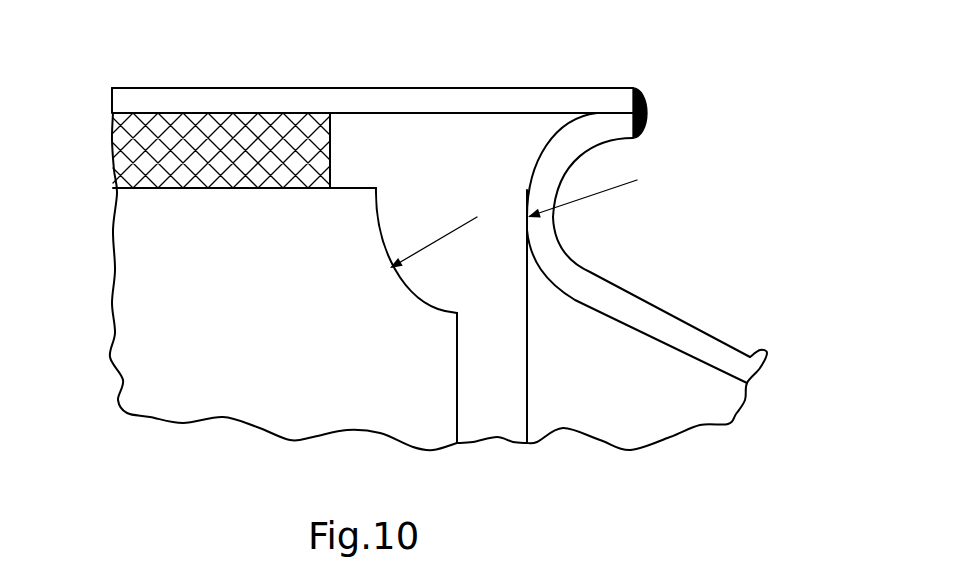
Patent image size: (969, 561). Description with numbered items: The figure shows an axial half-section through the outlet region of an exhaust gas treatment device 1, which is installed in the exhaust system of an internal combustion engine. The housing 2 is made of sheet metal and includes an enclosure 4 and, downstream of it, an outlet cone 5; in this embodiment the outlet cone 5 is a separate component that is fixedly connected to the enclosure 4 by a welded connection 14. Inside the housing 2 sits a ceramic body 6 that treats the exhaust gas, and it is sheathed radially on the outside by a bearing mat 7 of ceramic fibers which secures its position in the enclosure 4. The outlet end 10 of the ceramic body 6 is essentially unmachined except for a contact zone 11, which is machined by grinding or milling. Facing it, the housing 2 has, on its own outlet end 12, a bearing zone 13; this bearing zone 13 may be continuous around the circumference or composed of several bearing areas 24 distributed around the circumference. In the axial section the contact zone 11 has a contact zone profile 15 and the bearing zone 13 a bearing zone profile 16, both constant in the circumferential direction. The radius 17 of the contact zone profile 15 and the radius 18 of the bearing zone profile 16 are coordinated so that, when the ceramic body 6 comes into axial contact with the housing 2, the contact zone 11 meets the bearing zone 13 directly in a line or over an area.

The exhaust gas treatment device 1 is at (797, 173).
The housing 2 is at (152, 85).
The enclosure 4 is at (264, 95).
The outlet cone 5 is at (690, 348).
The ceramic body 6 is at (139, 397).
The bearing mat 7 is at (165, 166).
The outlet end 10 is at (458, 400).
The contact zone 11 is at (440, 297).
The outlet end 12 is at (650, 335).
The bearing zone 13 is at (514, 197).
The welded connection 14 is at (649, 100).
The contact zone profile 15 is at (380, 208).
The bearing zone profile 16 is at (532, 243).
The radius of the contact zone profile 17 is at (438, 239).
The radius of the bearing zone profile 18 is at (597, 193).
The bearing area 24 is at (528, 168).